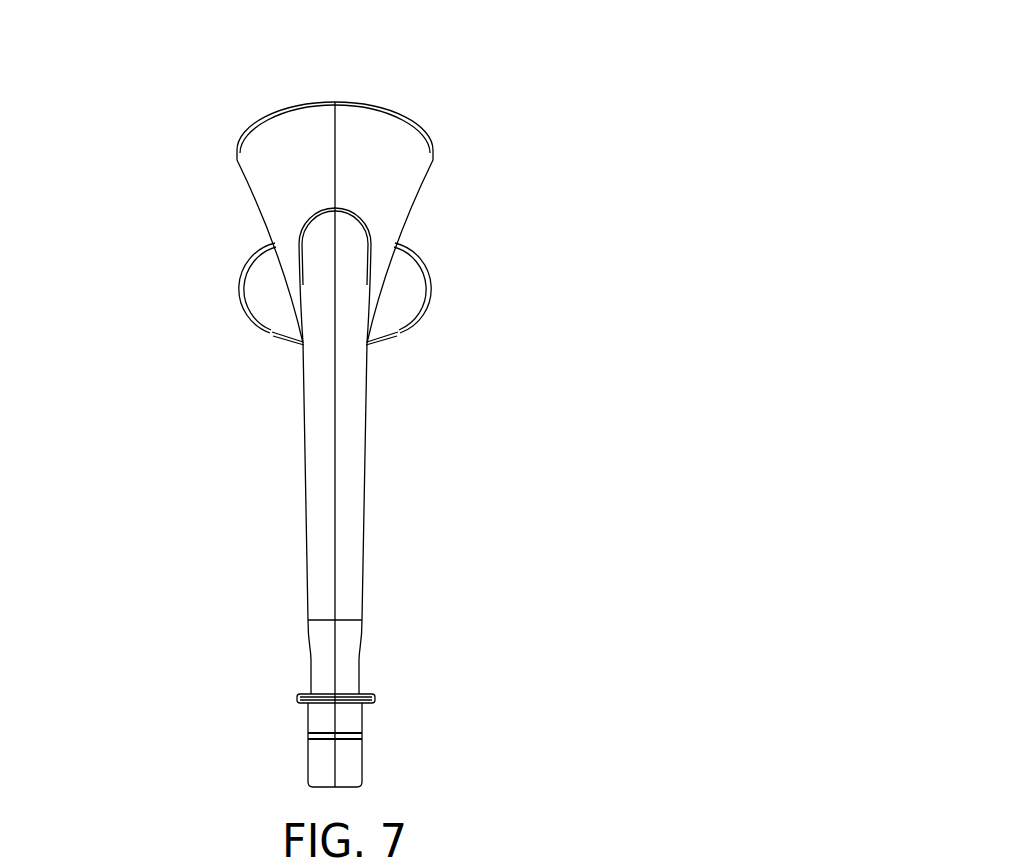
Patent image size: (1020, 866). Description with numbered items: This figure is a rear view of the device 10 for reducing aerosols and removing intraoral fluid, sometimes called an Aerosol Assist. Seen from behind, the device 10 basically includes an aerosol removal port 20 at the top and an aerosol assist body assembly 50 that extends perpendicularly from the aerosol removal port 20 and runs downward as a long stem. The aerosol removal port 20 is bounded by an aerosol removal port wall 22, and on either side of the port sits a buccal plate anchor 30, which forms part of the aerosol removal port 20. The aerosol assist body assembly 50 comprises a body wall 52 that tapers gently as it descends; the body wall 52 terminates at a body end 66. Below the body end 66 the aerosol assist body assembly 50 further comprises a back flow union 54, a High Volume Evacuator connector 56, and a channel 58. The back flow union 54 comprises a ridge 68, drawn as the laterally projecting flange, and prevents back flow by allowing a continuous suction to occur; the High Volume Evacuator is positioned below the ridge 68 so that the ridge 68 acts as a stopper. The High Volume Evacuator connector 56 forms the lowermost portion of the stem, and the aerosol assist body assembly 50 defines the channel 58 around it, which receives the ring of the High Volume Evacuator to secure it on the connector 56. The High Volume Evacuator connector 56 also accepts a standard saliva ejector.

The device for reducing aerosols and removing intraoral fluid 10 is at (643, 77).
The aerosol removal port 20 is at (162, 176).
The aerosol removal port wall 22 is at (405, 147).
The buccal plate anchor 30 is at (404, 310).
The aerosol assist body assembly 50 is at (226, 492).
The body wall 52 is at (353, 544).
The back flow union 54 is at (358, 672).
The High Volume Evacuator connector 56 is at (363, 760).
The channel 58 is at (308, 735).
The body end 66 is at (352, 618).
The ridge 68 is at (374, 702).